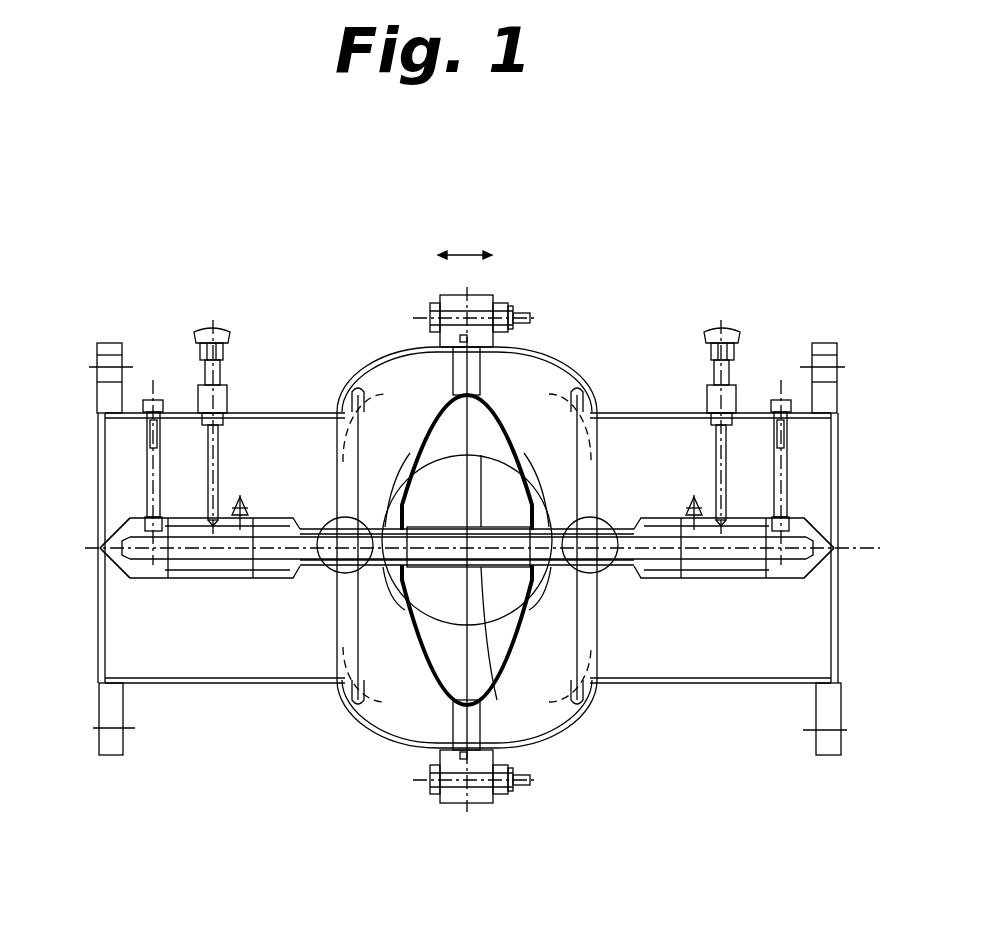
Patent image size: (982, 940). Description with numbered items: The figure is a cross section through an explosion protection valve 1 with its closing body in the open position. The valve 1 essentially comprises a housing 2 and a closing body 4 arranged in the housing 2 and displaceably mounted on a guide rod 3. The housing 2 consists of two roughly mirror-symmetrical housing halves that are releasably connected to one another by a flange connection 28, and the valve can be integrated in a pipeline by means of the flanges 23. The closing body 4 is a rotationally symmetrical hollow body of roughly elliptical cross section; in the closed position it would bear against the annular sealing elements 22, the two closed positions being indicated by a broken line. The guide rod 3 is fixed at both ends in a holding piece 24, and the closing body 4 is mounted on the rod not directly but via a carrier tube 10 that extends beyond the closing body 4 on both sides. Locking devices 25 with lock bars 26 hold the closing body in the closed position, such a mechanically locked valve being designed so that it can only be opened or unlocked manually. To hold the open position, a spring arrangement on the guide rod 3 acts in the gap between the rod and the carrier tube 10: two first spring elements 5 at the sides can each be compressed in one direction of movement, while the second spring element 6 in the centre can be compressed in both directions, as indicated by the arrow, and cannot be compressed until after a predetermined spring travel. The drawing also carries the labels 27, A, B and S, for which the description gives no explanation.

The explosion protection valve 1 is at (143, 180).
The housing 2 is at (553, 357).
The guide rod 3 is at (313, 537).
The closing body 4 is at (440, 693).
The first spring element 5 is at (228, 580).
The second spring element 6 is at (507, 687).
The carrier tube 10 is at (330, 680).
The annular sealing element 22 is at (590, 713).
The flange 23 is at (112, 742).
The holding piece 24 is at (135, 575).
The locking device 25 is at (205, 327).
The lock bar 26 is at (223, 478).
The bolt 27 is at (142, 467).
The flange connection 28 is at (481, 302).
The position A is at (403, 500).
The position B is at (533, 568).
The axis S is at (468, 813).